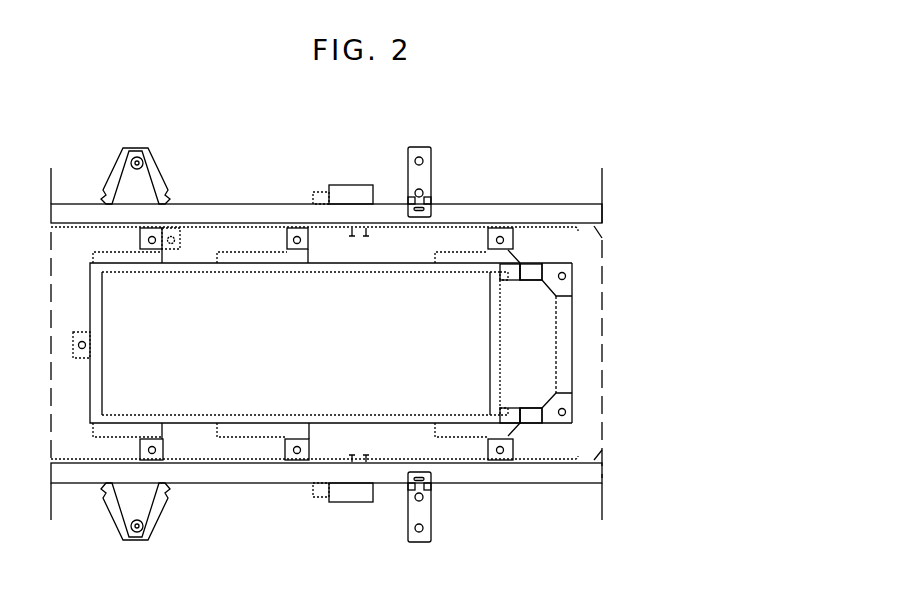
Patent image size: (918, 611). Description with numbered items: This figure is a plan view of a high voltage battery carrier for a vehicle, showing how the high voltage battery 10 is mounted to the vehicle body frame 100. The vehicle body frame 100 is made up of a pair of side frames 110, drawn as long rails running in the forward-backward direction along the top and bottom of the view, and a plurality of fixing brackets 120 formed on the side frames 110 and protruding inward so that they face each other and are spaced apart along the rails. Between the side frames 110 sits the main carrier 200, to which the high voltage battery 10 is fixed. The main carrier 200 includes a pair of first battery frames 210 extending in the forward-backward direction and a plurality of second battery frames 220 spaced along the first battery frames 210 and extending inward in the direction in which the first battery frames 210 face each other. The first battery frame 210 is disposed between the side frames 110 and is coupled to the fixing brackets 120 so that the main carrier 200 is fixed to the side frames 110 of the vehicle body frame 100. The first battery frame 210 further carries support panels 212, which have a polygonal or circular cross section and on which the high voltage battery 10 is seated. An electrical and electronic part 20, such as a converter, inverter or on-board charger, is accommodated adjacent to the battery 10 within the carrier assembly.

The high voltage battery 10 is at (274, 372).
The electrical and electronic part 20 is at (523, 322).
The vehicle body frame 100 is at (238, 206).
The side frame 110 is at (210, 478).
The fixing bracket 120 is at (293, 230).
The main carrier 200 is at (605, 296).
The first battery frame 210 is at (535, 272).
The support panel 212 is at (543, 417).
The second battery frame 220 is at (563, 353).